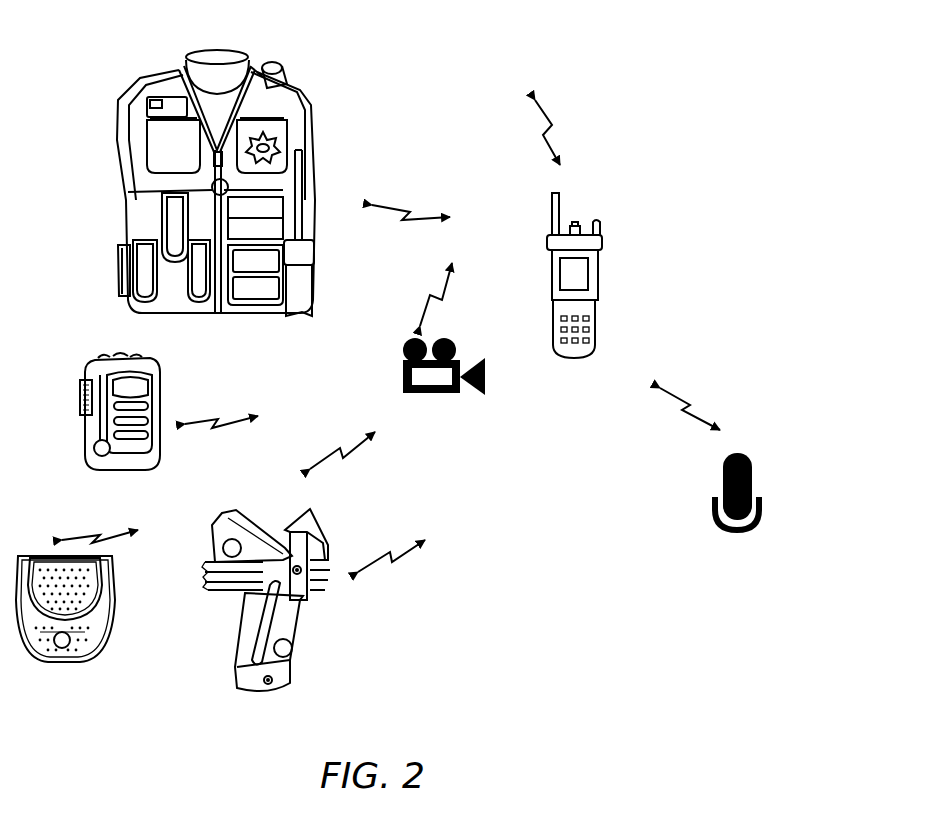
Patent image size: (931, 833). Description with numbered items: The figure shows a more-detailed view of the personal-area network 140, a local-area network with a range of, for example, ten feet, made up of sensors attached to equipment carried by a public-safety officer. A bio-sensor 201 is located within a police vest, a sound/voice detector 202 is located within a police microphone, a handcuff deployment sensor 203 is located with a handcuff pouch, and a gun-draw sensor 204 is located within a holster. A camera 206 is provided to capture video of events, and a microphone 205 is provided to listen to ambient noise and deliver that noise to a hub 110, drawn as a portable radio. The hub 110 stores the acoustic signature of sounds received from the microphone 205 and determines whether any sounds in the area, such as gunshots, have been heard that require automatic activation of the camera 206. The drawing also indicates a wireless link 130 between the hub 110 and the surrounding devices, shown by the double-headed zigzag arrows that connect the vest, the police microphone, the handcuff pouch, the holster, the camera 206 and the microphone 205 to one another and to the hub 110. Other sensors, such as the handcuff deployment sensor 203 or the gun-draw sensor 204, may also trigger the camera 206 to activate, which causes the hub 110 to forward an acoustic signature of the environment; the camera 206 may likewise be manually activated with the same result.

The personal-area network 140 is at (62, 25).
The bio-sensor 201 is at (142, 188).
The sound/voice detector 202 is at (100, 468).
The handcuff deployment sensor 203 is at (60, 652).
The gun-draw sensor 204 is at (300, 648).
The microphone 205 is at (752, 465).
The camera 206 is at (447, 340).
The hub 110 is at (600, 228).
The wireless link 130 is at (556, 134).